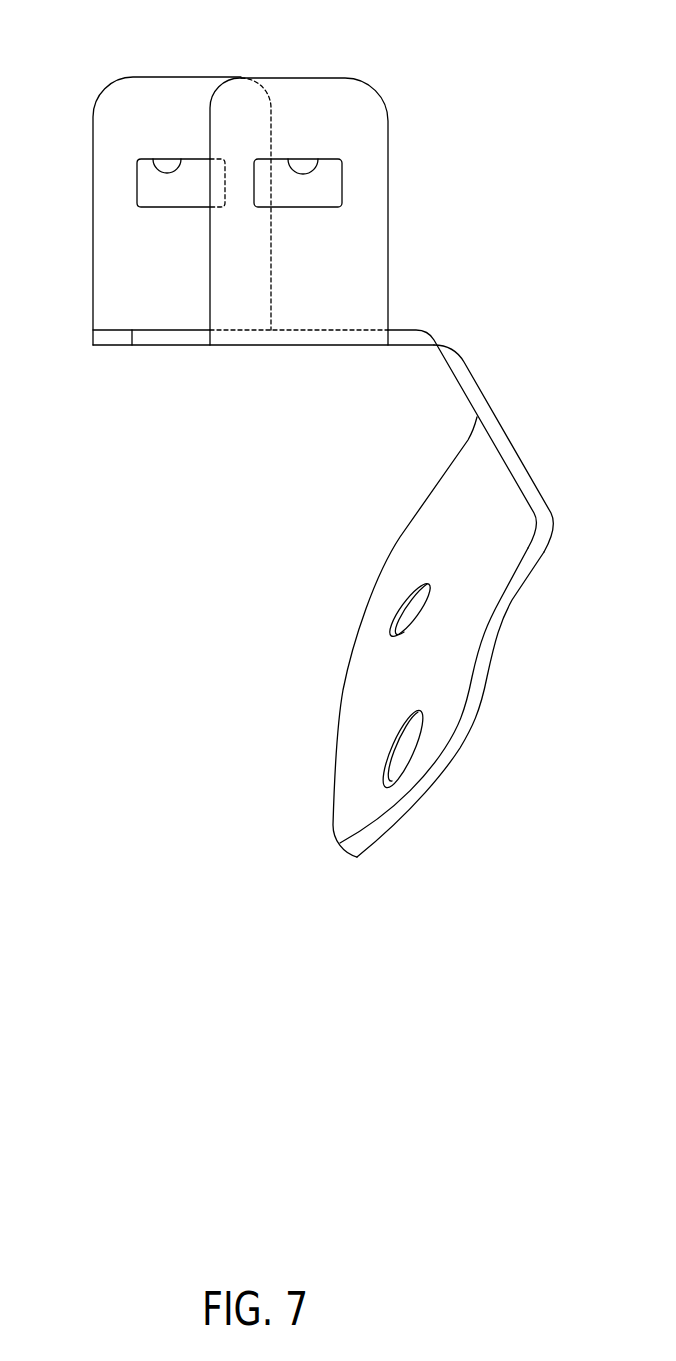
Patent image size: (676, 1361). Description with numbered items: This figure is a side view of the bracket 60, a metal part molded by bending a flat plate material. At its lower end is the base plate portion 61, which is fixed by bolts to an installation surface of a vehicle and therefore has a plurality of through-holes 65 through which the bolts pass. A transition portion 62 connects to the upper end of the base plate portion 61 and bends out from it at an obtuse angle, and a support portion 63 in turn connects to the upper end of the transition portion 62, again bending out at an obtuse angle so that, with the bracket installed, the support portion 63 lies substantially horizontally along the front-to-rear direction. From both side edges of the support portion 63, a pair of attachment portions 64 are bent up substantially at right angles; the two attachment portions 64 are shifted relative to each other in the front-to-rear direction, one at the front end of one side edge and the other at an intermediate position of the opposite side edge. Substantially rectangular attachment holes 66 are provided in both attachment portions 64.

The bracket 60 is at (310, 428).
The base plate portion 61 is at (399, 637).
The transition portion 62 is at (470, 387).
The support portion 63 is at (163, 338).
The attachment portion 64 is at (113, 95).
The through-hole 65 is at (403, 607).
The attachment hole 66 is at (181, 160).